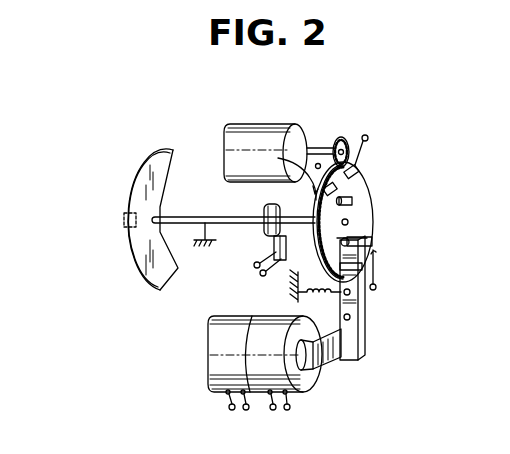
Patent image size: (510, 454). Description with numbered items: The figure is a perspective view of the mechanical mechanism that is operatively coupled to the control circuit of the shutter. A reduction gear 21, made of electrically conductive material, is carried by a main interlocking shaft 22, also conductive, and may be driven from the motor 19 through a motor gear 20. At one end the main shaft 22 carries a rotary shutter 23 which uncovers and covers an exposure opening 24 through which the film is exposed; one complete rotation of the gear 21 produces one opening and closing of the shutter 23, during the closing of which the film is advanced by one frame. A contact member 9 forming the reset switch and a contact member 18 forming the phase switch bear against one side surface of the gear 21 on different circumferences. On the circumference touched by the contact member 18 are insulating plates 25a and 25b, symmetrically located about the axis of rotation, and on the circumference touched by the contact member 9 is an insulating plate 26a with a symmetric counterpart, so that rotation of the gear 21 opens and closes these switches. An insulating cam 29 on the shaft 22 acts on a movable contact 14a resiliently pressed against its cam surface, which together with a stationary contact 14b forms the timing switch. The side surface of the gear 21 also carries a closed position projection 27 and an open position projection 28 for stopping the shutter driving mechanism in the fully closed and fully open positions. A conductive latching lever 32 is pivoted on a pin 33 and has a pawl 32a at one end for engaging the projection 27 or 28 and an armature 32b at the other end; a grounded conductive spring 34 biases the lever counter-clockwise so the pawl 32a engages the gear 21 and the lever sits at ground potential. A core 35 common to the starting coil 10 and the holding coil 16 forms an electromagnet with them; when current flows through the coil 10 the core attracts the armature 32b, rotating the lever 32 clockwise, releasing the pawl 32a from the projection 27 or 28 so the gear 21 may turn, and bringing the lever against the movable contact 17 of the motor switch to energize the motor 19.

The contact member 9 is at (317, 162).
The starting coil 10 is at (272, 330).
The movable contact 14a is at (254, 265).
The stationary contact 14b is at (273, 243).
The holding coil 16 is at (238, 330).
The movable contact of the motor switch 17 is at (380, 262).
The contact member 18 is at (365, 134).
The motor 19 is at (273, 123).
The motor gear 20 is at (340, 137).
The reduction gear 21 is at (370, 207).
The main interlocking shaft 22 is at (207, 215).
The rotary shutter 23 is at (160, 291).
The exposure opening 24 is at (122, 220).
The insulating plate 25a is at (360, 168).
The insulating plate 25b is at (352, 292).
The insulating plate 26a is at (278, 168).
The closed position projection 27 is at (372, 230).
The open position projection 28 is at (355, 198).
The cam 29 is at (266, 208).
The latching lever 32 is at (360, 302).
The pawl 32a is at (368, 243).
The armature 32b is at (332, 352).
The pin 33 is at (350, 320).
The spring 34 is at (303, 284).
The core 35 is at (303, 393).